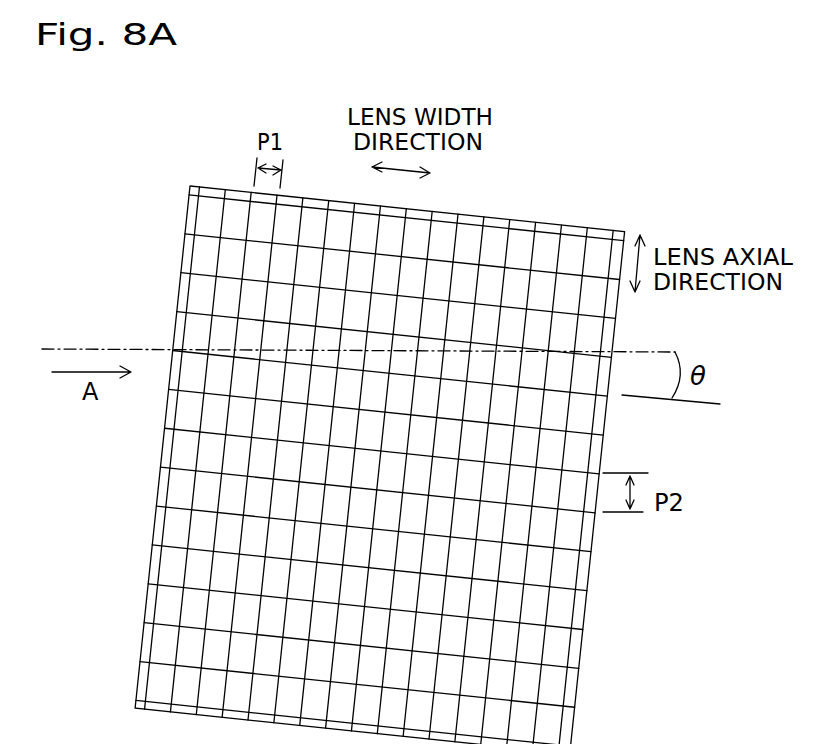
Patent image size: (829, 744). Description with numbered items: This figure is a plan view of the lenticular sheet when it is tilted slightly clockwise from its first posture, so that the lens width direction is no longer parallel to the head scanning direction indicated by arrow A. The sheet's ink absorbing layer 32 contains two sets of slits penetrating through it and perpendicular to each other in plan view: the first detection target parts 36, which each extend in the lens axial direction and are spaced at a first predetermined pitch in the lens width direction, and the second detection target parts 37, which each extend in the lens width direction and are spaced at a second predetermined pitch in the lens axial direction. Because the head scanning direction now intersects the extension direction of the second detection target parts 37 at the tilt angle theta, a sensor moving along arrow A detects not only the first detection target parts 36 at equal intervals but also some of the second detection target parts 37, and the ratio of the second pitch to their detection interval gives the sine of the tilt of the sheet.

The ink absorbing layer 32 is at (573, 687).
The first detection target parts 36 is at (250, 218).
The second detection target parts 37 is at (558, 620).